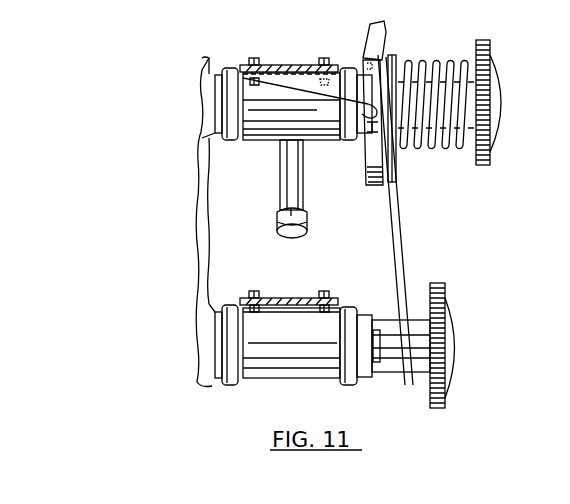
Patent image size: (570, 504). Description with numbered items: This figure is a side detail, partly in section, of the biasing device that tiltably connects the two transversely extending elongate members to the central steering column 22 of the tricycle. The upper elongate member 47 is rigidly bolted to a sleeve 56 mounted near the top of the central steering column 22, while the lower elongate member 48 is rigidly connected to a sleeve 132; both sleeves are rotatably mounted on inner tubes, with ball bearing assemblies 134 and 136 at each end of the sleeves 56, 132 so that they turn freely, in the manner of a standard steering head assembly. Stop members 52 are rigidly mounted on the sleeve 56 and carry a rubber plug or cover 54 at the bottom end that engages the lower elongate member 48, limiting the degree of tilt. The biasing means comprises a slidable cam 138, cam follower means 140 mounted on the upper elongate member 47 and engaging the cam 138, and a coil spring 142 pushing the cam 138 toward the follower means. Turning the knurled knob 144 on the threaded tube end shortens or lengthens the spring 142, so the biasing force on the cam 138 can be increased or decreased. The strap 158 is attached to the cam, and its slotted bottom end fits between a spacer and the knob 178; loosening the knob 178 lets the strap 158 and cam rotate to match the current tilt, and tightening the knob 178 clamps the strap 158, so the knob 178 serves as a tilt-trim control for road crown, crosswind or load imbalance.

The central steering column 22 is at (206, 222).
The upper tiltable elongate member 47 is at (292, 63).
The lower tiltable elongate member 48 is at (294, 296).
The stop member 52 is at (282, 168).
The rubber plug or cover 54 is at (278, 221).
The sleeve 56 is at (245, 98).
The sleeve 132 is at (298, 358).
The ball bearing assembly 134 is at (230, 128).
The ball bearing assembly 136 is at (350, 136).
The slidable cam 138 is at (366, 172).
The cam follower means 140 is at (364, 64).
The coil spring 142 is at (451, 135).
The knurled knob 144 is at (496, 152).
The strap 158 is at (394, 247).
The knob 178 is at (443, 297).